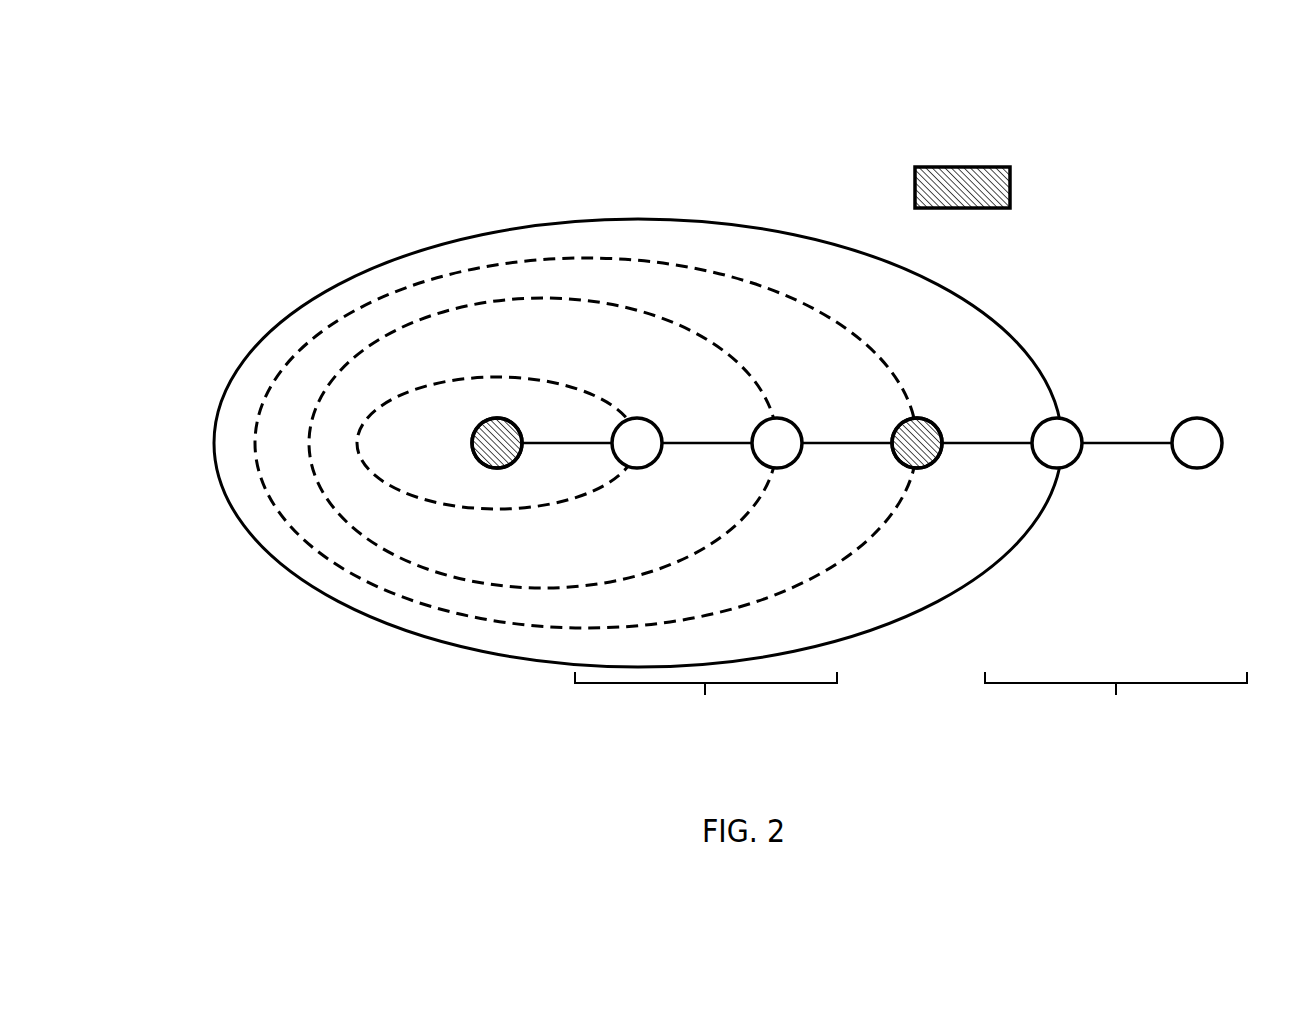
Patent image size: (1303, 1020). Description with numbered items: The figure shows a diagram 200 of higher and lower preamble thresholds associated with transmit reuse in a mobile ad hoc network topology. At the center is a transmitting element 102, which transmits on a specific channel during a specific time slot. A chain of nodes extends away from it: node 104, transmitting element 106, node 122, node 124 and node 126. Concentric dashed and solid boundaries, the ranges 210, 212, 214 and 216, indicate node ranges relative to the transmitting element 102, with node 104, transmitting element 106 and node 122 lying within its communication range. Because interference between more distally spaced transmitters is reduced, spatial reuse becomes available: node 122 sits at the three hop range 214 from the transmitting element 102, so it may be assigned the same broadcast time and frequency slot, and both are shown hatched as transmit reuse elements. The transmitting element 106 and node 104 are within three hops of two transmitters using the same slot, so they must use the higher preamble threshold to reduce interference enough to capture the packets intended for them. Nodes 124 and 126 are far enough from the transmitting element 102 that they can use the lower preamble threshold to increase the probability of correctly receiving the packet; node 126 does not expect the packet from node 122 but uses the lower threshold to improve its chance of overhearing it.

The wireless network topology 200 is at (202, 112).
The transmitting element 102 is at (471, 440).
The node 104 is at (611, 437).
The transmitting element 106 is at (752, 434).
The node 122 is at (891, 433).
The node 124 is at (1031, 435).
The node 126 is at (1171, 437).
The range 210 is at (520, 377).
The range 212 is at (732, 357).
The three hop range 214 is at (893, 364).
The range 216 is at (1027, 348).